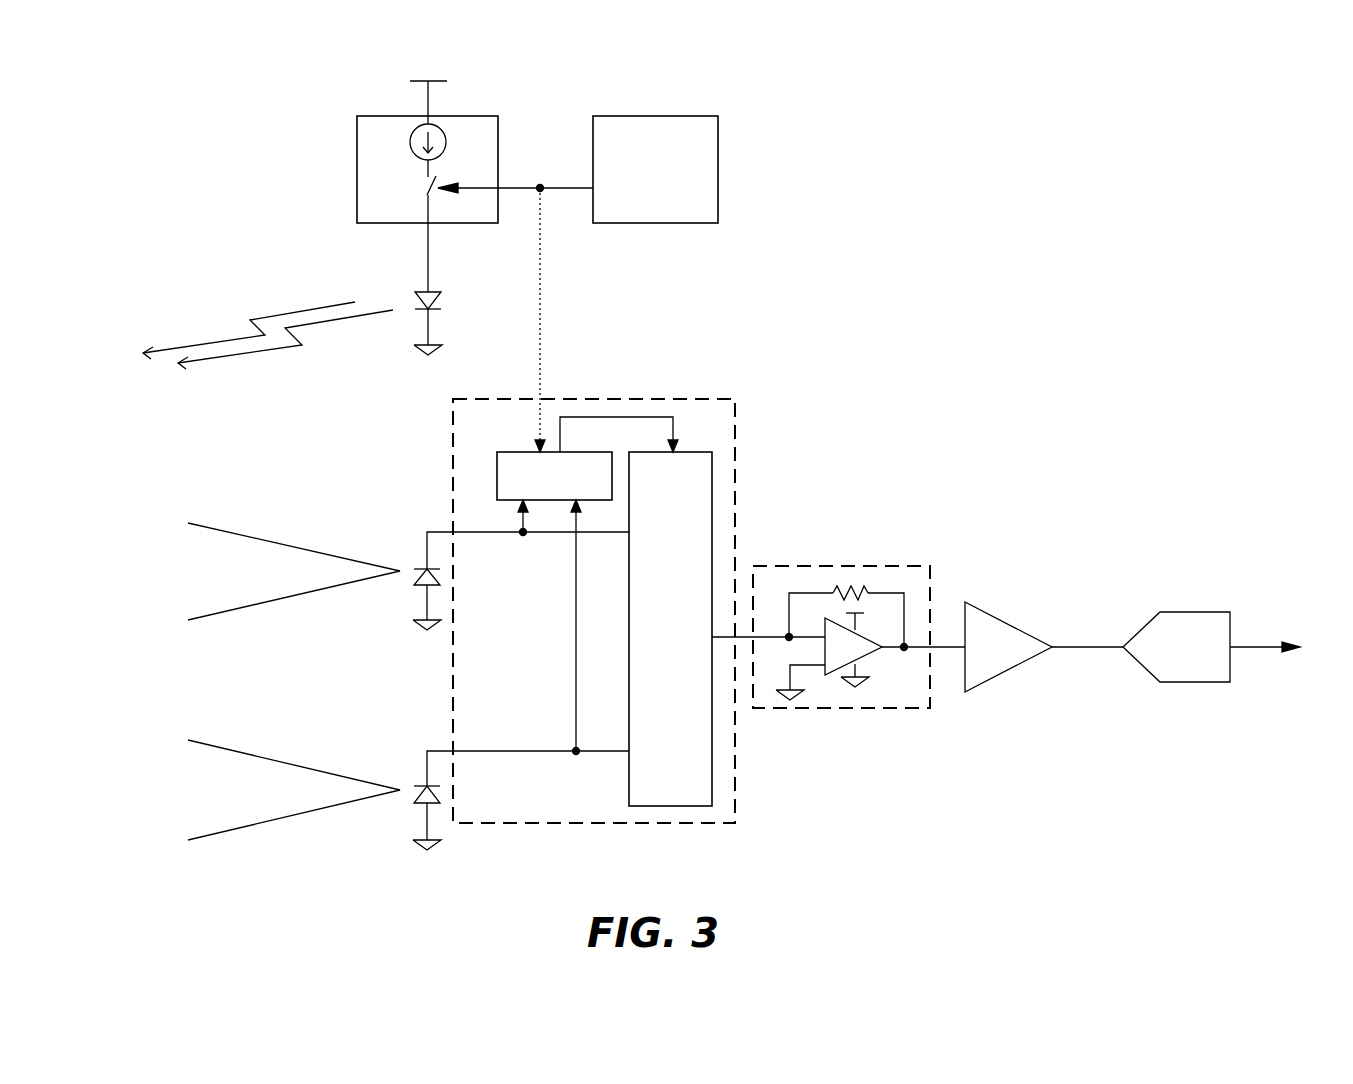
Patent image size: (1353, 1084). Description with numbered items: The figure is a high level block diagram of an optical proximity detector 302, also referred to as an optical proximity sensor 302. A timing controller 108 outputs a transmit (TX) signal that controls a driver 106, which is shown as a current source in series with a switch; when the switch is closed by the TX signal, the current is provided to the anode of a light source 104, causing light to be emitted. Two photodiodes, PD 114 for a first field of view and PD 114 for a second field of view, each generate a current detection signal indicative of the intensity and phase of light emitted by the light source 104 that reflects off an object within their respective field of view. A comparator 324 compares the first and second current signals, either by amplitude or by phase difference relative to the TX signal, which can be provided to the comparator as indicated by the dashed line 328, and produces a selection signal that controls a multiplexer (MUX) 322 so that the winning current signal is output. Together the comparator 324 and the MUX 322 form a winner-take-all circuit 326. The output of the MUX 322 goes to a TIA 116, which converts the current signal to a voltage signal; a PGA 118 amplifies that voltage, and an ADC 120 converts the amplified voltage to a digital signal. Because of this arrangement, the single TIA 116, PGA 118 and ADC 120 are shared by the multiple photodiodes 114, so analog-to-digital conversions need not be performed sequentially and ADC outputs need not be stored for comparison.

The optical proximity detector 302 is at (146, 74).
The driver 106 is at (373, 113).
The timing controller 108 is at (664, 113).
The light source 104 is at (418, 287).
The dashed line 328 is at (545, 328).
The winner-take-all circuit 326 is at (653, 394).
The comparator 324 is at (518, 446).
The multiplexer 322 is at (685, 450).
The photodiode 114 is at (417, 557).
The TIA 116 is at (892, 566).
The PGA 118 is at (1015, 624).
The ADC 120 is at (1193, 608).